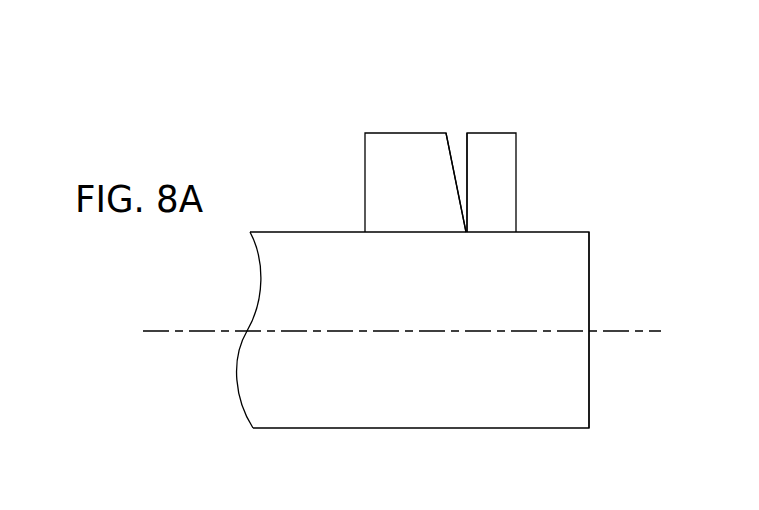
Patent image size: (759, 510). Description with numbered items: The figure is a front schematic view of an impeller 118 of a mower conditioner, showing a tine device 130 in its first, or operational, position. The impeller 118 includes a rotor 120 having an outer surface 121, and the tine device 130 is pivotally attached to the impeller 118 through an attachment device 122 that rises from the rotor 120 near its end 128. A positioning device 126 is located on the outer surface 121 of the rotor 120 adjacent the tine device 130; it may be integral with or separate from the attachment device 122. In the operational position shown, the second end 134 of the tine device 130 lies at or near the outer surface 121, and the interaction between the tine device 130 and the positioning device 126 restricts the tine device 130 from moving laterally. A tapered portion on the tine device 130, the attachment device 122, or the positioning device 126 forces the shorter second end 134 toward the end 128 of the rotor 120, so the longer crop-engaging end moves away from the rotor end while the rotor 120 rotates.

The impeller 118 is at (262, 98).
The rotor 120 is at (562, 365).
The outer surface of the rotor 121 is at (446, 395).
The attachment device 122 is at (398, 177).
The positioning device 126 is at (451, 215).
The end of the rotor 128 is at (589, 294).
The tine device 130 is at (495, 152).
The second end of the tine device 134 is at (492, 189).